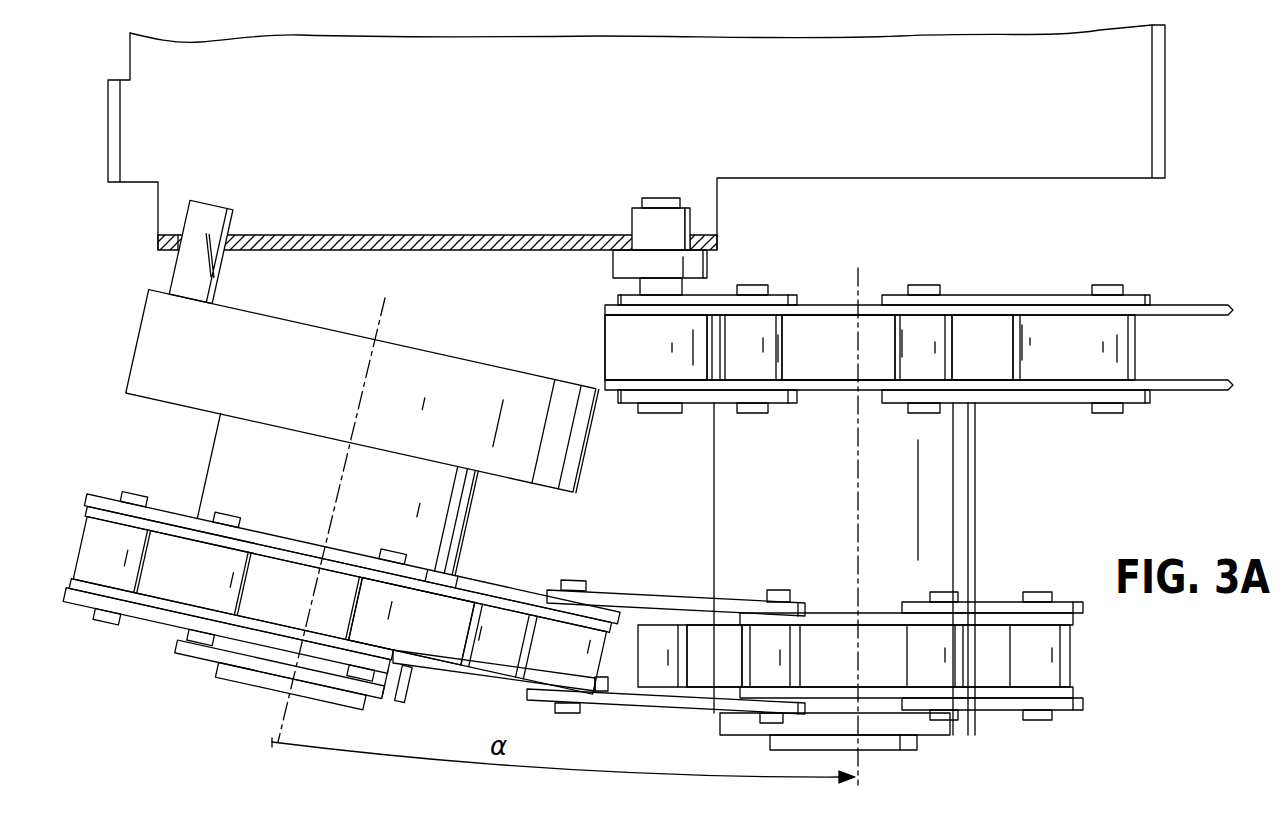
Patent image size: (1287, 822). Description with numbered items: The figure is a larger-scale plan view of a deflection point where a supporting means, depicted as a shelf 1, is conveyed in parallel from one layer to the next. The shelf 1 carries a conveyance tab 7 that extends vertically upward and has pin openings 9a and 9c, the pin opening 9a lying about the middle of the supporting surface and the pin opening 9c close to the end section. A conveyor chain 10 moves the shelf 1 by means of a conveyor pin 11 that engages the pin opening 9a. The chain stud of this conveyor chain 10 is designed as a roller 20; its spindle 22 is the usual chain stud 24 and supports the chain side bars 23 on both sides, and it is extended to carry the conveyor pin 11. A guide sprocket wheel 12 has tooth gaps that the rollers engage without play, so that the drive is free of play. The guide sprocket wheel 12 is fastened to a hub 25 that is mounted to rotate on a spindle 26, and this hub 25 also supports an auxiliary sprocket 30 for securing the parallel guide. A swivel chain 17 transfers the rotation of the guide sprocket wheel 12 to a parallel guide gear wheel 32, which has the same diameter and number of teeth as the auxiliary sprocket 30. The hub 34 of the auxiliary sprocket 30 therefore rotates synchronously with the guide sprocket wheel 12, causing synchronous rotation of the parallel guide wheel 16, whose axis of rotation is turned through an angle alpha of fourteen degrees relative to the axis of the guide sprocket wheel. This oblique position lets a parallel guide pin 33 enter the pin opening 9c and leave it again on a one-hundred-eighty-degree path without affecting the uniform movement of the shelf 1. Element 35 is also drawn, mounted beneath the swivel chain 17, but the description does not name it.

The shelf 1 is at (143, 220).
The conveyance tab 7 is at (432, 253).
The pin opening 9a is at (702, 244).
The pin opening 9c is at (170, 248).
The conveyor chain 10 is at (1180, 305).
The conveyor pin 11 is at (688, 226).
The guide sprocket wheel 12 is at (987, 347).
The parallel guide wheel 16 is at (158, 338).
The swivel chain 17 is at (633, 700).
The roller 20 is at (625, 336).
The spindle 22 is at (645, 411).
The chain side bars 23 is at (890, 295).
The chain stud 24 is at (920, 290).
The hub 25 is at (921, 487).
The spindle 26 is at (900, 750).
The auxiliary sprocket 30 is at (715, 665).
The parallel guide gear wheel 32 is at (445, 636).
The parallel guide pin 33 is at (222, 256).
The hub 34 is at (240, 468).
The bearing block 35 is at (243, 683).